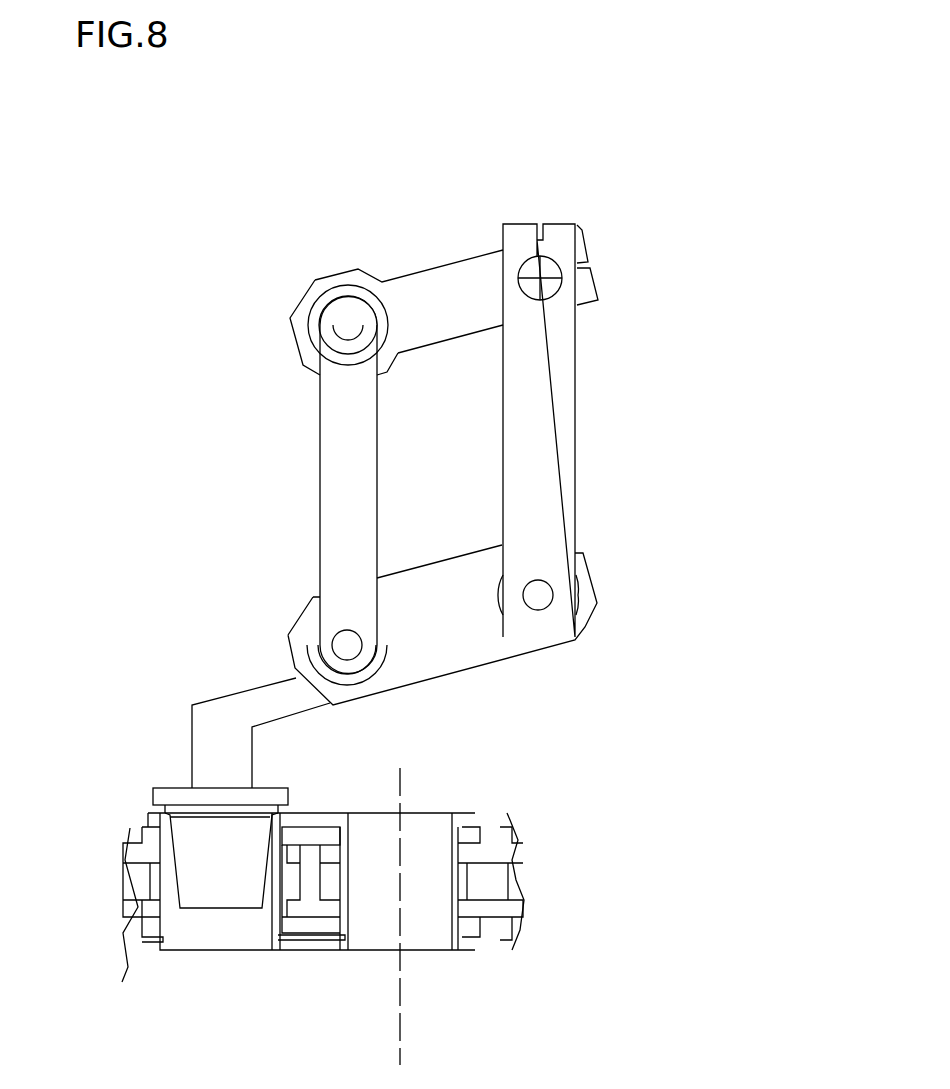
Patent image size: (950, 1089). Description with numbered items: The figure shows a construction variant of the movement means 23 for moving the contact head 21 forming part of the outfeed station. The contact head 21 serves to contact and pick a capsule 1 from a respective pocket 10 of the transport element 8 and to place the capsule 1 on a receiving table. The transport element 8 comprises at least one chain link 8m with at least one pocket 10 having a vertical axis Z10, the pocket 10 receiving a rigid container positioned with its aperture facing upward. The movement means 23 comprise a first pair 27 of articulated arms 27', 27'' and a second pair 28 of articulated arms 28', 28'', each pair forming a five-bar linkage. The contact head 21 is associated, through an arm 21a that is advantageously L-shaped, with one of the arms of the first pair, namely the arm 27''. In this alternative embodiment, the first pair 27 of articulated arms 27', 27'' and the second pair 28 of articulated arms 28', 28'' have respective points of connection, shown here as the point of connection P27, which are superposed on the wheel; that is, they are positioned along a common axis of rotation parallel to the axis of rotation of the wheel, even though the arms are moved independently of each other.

The movement means 23 is at (650, 445).
The first pair of articulated arms 27 is at (526, 628).
The articulated arm 27' is at (645, 430).
The articulated arm 27'' is at (490, 628).
The point of connection P27 is at (542, 277).
The second pair of articulated arms 28 is at (303, 408).
The articulated arm 28' is at (396, 258).
The articulated arm 28'' is at (275, 484).
The contact head 21 is at (163, 797).
The arm 21a is at (223, 712).
The transport element 8 is at (557, 915).
The chain link 8m is at (310, 927).
The pocket 10 is at (423, 838).
The capsule 1 is at (232, 882).
The vertical axis Z10 is at (401, 997).